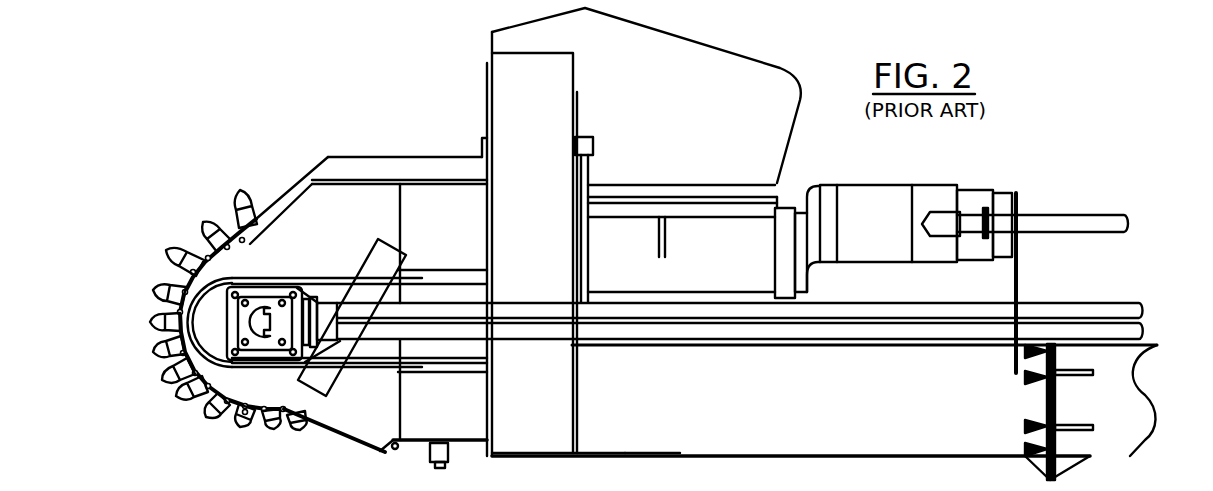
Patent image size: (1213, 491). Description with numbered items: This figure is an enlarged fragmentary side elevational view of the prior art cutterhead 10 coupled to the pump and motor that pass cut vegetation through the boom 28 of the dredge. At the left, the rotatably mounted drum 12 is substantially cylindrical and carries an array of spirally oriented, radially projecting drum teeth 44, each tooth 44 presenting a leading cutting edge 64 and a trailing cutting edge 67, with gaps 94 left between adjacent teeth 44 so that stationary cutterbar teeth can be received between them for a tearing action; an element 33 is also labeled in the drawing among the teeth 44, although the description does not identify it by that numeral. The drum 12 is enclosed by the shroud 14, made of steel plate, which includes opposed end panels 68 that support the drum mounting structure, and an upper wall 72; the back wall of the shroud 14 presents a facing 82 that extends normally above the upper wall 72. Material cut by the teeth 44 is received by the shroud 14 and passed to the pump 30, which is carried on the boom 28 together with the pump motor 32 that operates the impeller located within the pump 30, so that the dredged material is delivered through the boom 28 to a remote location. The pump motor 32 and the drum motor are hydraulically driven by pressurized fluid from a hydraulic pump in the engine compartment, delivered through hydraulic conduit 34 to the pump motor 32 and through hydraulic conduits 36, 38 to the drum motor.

The cutterhead 10 is at (322, 134).
The drum 12 is at (153, 320).
The shroud 14 is at (325, 420).
The boom 28 is at (1120, 441).
The pump 30 is at (508, 95).
The pump motor 32 is at (893, 198).
The tooth block 33 is at (232, 430).
The hydraulic conduit 34 is at (1062, 222).
The hydraulic conduit 36 is at (1088, 306).
The hydraulic conduit 38 is at (1116, 331).
The drum teeth 44 is at (238, 189).
The leading cutting edge 64 is at (242, 427).
The trailing cutting edge 67 is at (213, 418).
The end panel 68 is at (308, 202).
The upper wall 72 is at (393, 178).
The facing 82 is at (768, 489).
The gaps 94 is at (213, 226).